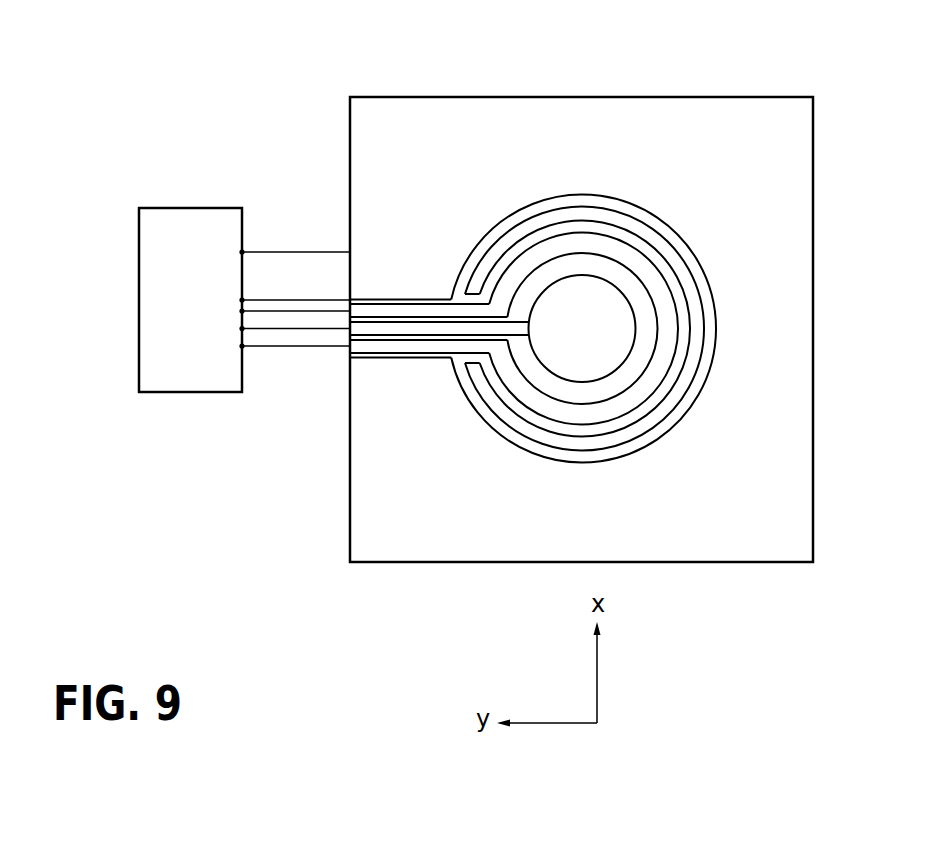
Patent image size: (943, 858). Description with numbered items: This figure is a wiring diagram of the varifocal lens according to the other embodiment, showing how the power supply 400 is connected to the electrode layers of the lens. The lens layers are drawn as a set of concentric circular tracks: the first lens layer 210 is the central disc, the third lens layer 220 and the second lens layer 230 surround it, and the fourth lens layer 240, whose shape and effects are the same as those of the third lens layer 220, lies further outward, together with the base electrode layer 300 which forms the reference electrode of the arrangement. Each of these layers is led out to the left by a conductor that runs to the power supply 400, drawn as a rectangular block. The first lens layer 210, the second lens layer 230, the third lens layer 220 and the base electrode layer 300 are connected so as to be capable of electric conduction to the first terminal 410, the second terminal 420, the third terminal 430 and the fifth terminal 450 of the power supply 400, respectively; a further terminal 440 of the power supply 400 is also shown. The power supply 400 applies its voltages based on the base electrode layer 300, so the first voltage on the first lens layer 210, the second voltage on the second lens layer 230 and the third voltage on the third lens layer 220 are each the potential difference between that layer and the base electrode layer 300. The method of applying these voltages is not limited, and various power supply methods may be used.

The first lens layer 210 is at (615, 335).
The third lens layer 220 is at (650, 278).
The second lens layer 230 is at (581, 142).
The fourth lens layer 240 is at (640, 228).
The base electrode layer 300 is at (572, 239).
The power supply 400 is at (186, 393).
The first terminal 410 is at (242, 328).
The second terminal 420 is at (242, 311).
The third terminal 430 is at (242, 252).
The fourth lead line 440 is at (242, 346).
The fifth terminal 450 is at (242, 300).